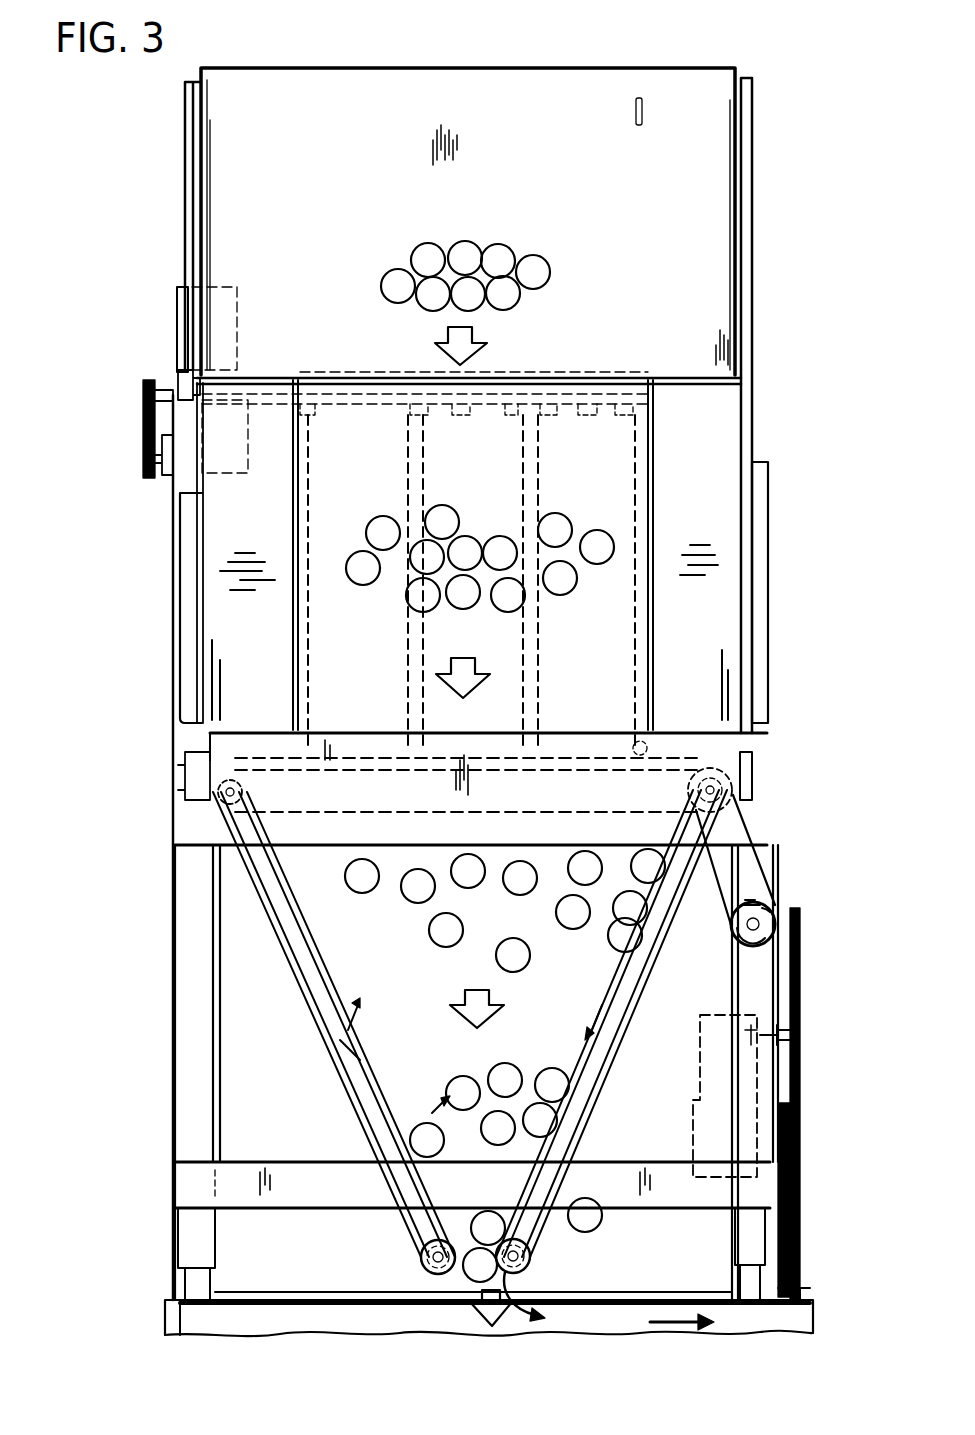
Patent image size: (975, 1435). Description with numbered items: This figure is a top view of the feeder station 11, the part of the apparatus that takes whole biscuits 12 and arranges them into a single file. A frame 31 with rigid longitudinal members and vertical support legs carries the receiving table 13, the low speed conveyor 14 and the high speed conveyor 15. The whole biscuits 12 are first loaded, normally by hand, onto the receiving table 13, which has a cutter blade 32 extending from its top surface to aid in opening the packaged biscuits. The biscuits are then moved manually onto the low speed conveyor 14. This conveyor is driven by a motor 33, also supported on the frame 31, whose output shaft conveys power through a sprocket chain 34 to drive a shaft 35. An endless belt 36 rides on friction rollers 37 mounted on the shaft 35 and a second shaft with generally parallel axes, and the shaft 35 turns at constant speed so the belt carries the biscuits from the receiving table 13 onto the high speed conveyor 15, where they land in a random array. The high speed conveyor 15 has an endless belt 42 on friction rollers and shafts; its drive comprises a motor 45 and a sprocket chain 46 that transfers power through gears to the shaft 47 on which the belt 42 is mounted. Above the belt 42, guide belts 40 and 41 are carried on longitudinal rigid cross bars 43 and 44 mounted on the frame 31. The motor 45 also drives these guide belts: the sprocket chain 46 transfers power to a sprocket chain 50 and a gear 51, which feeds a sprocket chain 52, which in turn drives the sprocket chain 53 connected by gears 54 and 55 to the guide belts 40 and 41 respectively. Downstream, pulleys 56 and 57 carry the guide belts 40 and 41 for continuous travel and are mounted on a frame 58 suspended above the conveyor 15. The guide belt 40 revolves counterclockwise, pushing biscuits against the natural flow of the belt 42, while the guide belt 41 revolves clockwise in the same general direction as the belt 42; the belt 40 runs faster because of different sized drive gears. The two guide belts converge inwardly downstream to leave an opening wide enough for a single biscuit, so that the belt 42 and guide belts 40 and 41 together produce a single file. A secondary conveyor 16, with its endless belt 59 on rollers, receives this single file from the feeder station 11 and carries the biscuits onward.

The feeder station 11 is at (166, 690).
The whole biscuits 12 is at (428, 262).
The receiving table 13 is at (266, 128).
The low speed conveyor 14 is at (340, 512).
The high speed conveyor 15 is at (395, 956).
The secondary conveyor 16 is at (578, 1330).
The frame 31 is at (198, 880).
The cutter blade 32 is at (642, 103).
The motor 33 is at (178, 325).
The sprocket chain 34 is at (143, 420).
The shaft 35 is at (184, 380).
The endless belt 36 is at (362, 620).
The friction rollers 37 is at (388, 378).
The guide belt 40 is at (320, 1035).
The guide belt 41 is at (612, 988).
The endless belt 42 is at (352, 925).
The cross bar 43 is at (210, 826).
The cross bar 44 is at (200, 1182).
The motor 45 is at (776, 1100).
The sprocket chain 46 is at (772, 1302).
The shaft 47 is at (796, 1306).
The sprocket chain 50 is at (802, 976).
The gear 51 is at (772, 911).
The sprocket chain 52 is at (762, 872).
The sprocket chain 53 is at (692, 750).
The gear 54 is at (215, 790).
The gear 55 is at (735, 783).
The pulley 56 is at (435, 1275).
The pulley 57 is at (530, 1262).
The frame 58 is at (352, 1053).
The endless belt 59 is at (488, 1330).